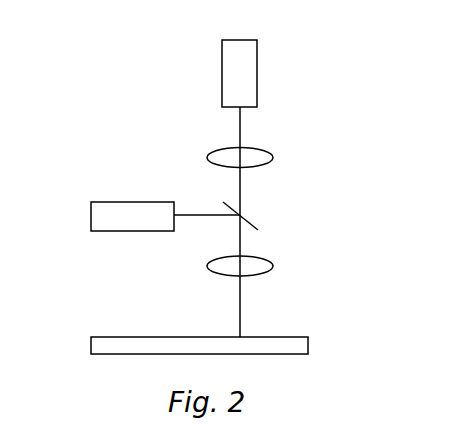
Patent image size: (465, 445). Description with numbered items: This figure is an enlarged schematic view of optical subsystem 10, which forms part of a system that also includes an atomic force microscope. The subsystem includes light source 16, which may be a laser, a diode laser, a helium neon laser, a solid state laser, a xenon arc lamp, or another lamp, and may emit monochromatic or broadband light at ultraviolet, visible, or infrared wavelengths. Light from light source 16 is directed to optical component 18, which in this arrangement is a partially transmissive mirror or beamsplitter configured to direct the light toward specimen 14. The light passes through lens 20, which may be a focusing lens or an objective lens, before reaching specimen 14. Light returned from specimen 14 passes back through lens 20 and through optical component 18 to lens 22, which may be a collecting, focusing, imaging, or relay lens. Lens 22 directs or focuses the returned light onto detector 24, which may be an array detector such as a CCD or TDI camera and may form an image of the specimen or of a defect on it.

The optical subsystem 10 is at (341, 172).
The specimen 14 is at (292, 336).
The light source 16 is at (107, 202).
The optical component 18 is at (248, 217).
The lens 20 is at (270, 260).
The lens 22 is at (268, 152).
The detector 24 is at (258, 75).